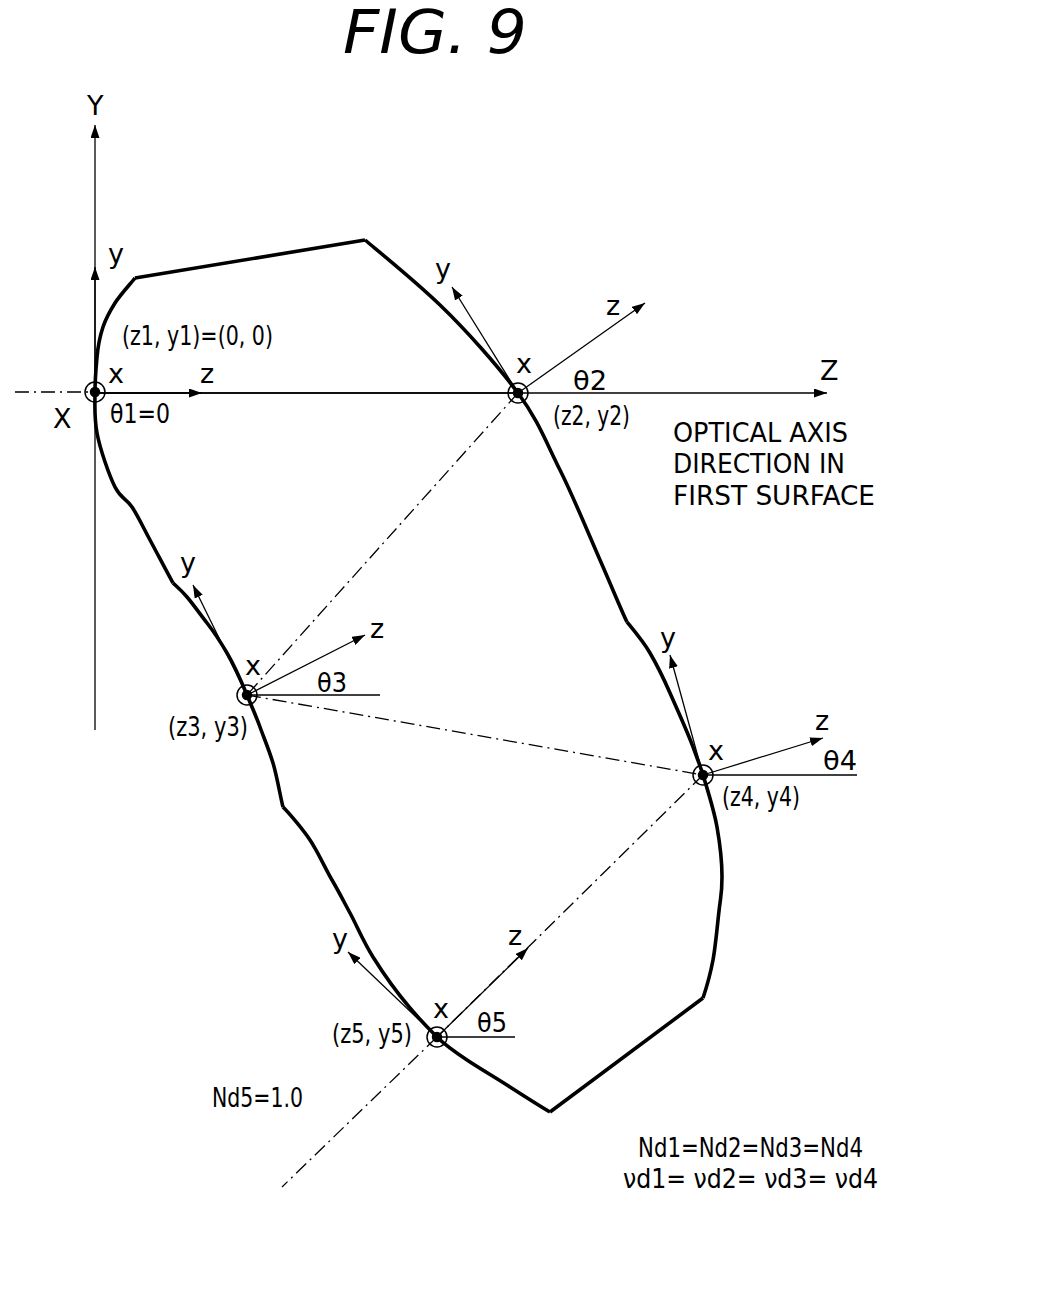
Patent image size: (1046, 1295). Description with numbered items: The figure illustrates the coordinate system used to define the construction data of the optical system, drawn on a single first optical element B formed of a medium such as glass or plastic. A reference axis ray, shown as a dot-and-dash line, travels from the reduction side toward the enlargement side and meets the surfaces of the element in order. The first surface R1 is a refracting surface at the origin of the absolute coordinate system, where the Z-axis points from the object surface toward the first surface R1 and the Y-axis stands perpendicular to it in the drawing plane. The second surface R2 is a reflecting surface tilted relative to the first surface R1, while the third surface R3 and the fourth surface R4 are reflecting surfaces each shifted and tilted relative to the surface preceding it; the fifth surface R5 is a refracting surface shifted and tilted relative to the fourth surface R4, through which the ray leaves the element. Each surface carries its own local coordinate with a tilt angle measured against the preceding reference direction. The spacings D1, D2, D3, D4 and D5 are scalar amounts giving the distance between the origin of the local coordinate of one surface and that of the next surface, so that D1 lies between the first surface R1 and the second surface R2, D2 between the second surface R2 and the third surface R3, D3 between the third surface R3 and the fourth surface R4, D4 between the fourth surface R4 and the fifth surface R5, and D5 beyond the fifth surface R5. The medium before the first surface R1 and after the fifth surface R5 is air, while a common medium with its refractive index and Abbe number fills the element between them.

The first optical element B is at (429, 641).
The first surface R1 is at (134, 430).
The second surface R2 is at (496, 414).
The third surface R3 is at (228, 698).
The fourth surface R4 is at (695, 810).
The fifth surface R5 is at (416, 965).
The surface spacing D1 is at (306, 412).
The surface spacing D2 is at (382, 544).
The surface spacing D3 is at (475, 737).
The surface spacing D4 is at (570, 906).
The surface spacing D5 is at (352, 1112).